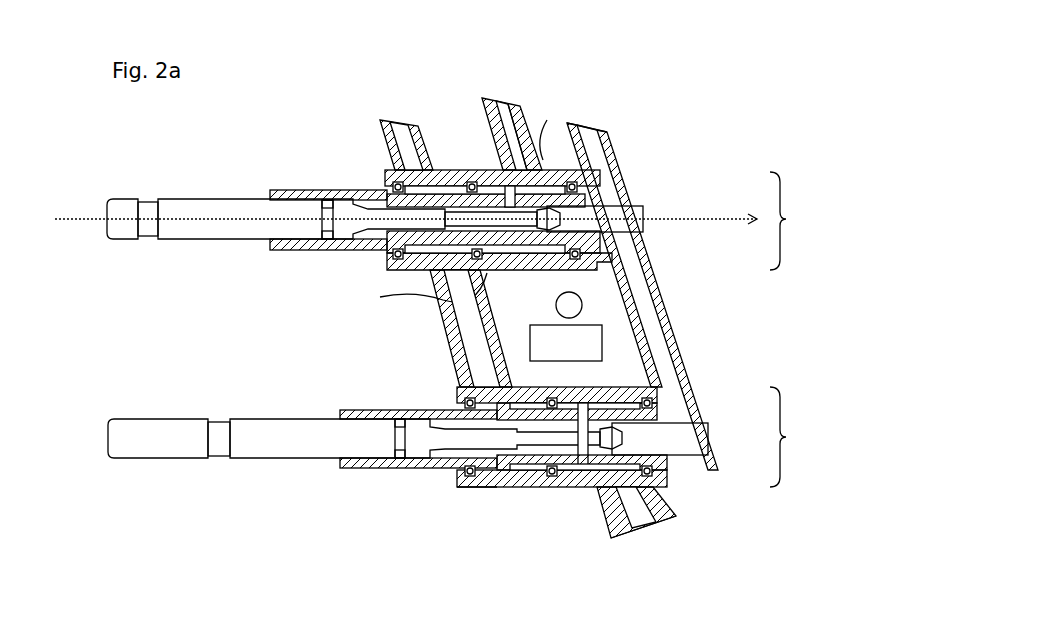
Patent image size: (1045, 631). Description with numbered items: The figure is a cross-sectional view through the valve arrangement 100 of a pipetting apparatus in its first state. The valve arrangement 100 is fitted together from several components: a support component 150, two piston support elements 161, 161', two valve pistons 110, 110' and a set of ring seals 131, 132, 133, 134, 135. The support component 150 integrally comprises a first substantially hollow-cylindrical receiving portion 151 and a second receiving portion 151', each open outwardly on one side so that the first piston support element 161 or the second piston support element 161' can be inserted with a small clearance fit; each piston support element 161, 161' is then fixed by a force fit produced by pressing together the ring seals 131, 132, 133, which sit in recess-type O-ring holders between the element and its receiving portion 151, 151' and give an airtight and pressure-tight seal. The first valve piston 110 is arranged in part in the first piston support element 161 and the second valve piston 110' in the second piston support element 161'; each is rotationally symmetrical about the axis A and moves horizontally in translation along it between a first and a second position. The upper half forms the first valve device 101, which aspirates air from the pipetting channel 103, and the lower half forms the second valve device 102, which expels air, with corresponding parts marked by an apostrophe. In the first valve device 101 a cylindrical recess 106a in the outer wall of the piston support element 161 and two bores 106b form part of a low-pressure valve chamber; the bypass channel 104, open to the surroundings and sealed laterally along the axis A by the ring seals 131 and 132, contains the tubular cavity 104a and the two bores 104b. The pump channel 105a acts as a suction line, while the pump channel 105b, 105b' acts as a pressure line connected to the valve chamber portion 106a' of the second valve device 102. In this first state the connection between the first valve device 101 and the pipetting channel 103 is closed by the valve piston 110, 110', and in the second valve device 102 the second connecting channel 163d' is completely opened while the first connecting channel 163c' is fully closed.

The valve arrangement 100 is at (647, 45).
The first valve device 101 is at (798, 221).
The second valve device 102 is at (795, 437).
The pipetting channel 103 is at (608, 122).
The bypass channel 104 is at (398, 125).
The tubular cavity 104a is at (440, 272).
The bores 104b is at (402, 250).
The pump channel 105a is at (521, 122).
The pump channel 105b is at (496, 108).
The pump channel 105b' is at (604, 514).
The cylindrical recess 106a is at (563, 132).
The valve chamber portion 106a' is at (577, 456).
The bores 106b is at (520, 262).
The first valve piston 110 is at (322, 191).
The second valve piston 110' is at (354, 407).
The ring seal 131 is at (400, 184).
The ring seal 132 is at (486, 160).
The ring seal 133 is at (572, 183).
The ring seal 134 is at (327, 198).
The ring seal 135 is at (548, 237).
The support component 150 is at (380, 180).
The first receiving portion 151 is at (412, 277).
The second receiving portion 151' is at (478, 340).
The first piston support element 161 is at (328, 238).
The second piston support element 161' is at (401, 422).
The first connecting channel 163c' is at (642, 556).
The second connecting channel 163d' is at (483, 521).
The axis A is at (67, 212).